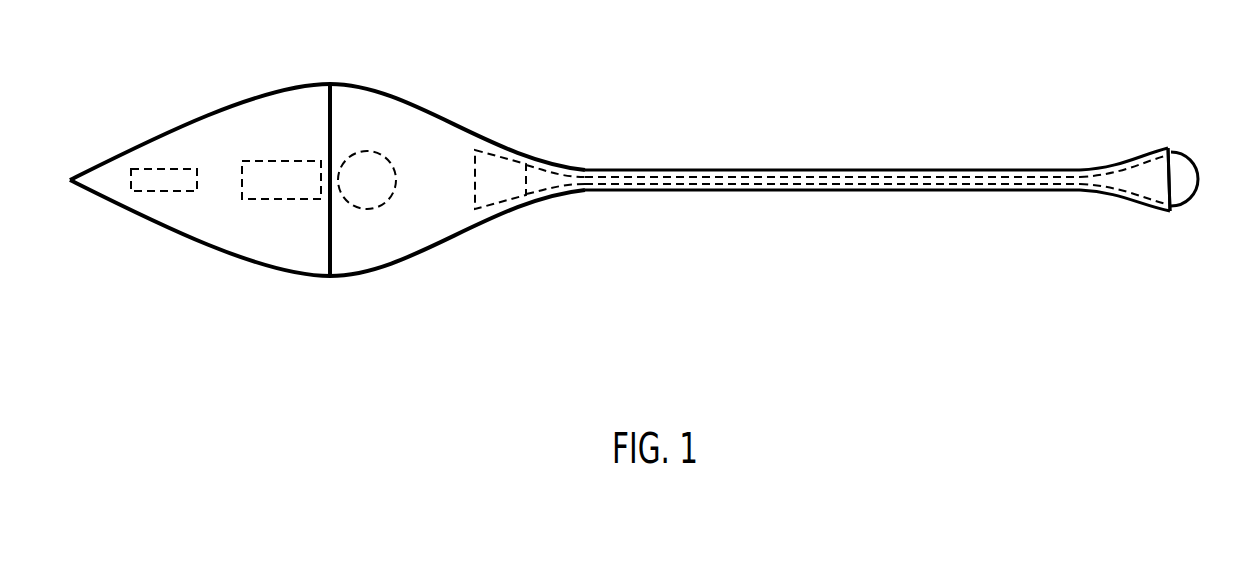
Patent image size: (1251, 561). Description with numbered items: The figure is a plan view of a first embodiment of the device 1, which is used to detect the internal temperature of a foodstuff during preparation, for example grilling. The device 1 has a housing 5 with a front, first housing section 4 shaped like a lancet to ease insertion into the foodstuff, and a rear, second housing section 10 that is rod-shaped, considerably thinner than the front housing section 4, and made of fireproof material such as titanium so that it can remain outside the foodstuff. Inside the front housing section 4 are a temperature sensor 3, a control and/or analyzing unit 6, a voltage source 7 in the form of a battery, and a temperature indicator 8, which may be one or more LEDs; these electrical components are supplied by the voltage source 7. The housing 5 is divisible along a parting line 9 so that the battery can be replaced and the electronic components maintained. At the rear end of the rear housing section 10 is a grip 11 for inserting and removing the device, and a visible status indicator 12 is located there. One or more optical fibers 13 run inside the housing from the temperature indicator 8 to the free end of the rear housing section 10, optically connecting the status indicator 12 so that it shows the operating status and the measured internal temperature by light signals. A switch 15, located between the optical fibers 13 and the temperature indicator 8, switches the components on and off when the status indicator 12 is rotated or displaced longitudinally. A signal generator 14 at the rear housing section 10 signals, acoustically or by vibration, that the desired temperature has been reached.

The device 1 is at (142, 63).
The temperature sensor 3 is at (135, 188).
The front housing section 4 is at (71, 290).
The housing 5 is at (1057, 167).
The control and/or analyzing unit 6 is at (283, 160).
The voltage source 7 is at (372, 152).
The temperature indicator 8 is at (505, 162).
The parting line 9 is at (335, 115).
The rear housing section 10 is at (568, 290).
The grip 11 is at (1128, 203).
The status indicator 12 is at (1184, 179).
The optical fiber 13 is at (892, 178).
The acoustic and/or optical signal generator 14 is at (1208, 145).
The switch 15 is at (566, 160).